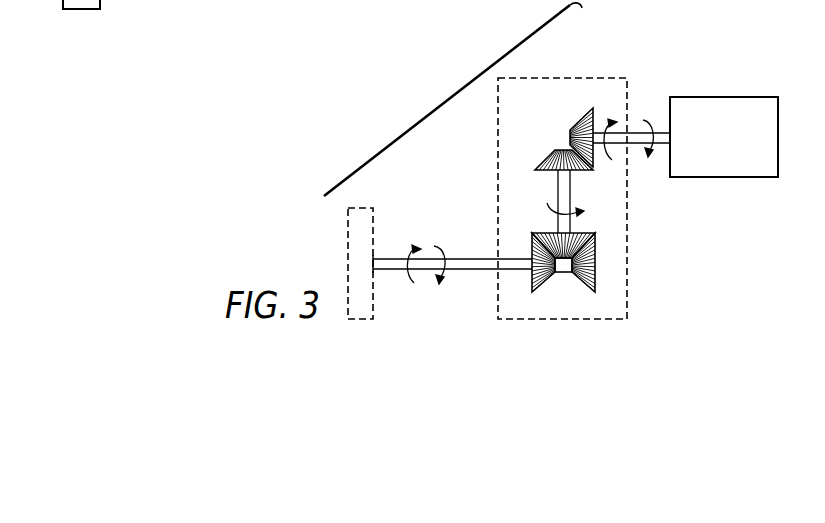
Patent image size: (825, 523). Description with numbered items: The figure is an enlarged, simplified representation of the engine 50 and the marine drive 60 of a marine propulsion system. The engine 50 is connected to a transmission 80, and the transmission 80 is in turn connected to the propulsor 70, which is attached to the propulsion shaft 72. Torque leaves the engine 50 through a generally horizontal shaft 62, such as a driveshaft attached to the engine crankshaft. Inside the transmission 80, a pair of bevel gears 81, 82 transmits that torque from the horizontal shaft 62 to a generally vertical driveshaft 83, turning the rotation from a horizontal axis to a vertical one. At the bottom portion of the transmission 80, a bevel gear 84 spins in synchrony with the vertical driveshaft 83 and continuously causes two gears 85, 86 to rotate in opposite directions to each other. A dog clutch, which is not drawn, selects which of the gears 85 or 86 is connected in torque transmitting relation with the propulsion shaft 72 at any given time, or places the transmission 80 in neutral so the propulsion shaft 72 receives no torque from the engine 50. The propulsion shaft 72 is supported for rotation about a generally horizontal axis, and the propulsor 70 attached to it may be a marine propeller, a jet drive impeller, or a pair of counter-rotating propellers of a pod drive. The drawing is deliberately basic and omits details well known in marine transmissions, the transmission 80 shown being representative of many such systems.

The engine 50 is at (725, 98).
The marine drive 60 is at (433, 110).
The generally horizontal shaft 62 is at (662, 132).
The propulsor 70 is at (366, 216).
The propulsion shaft 72 is at (453, 259).
The transmission 80 is at (576, 66).
The bevel gear 81 is at (585, 119).
The bevel gear 82 is at (545, 160).
The generally vertical driveshaft 83 is at (572, 194).
The bevel gear 84 is at (545, 233).
The gear 85 is at (595, 281).
The gear 86 is at (548, 279).